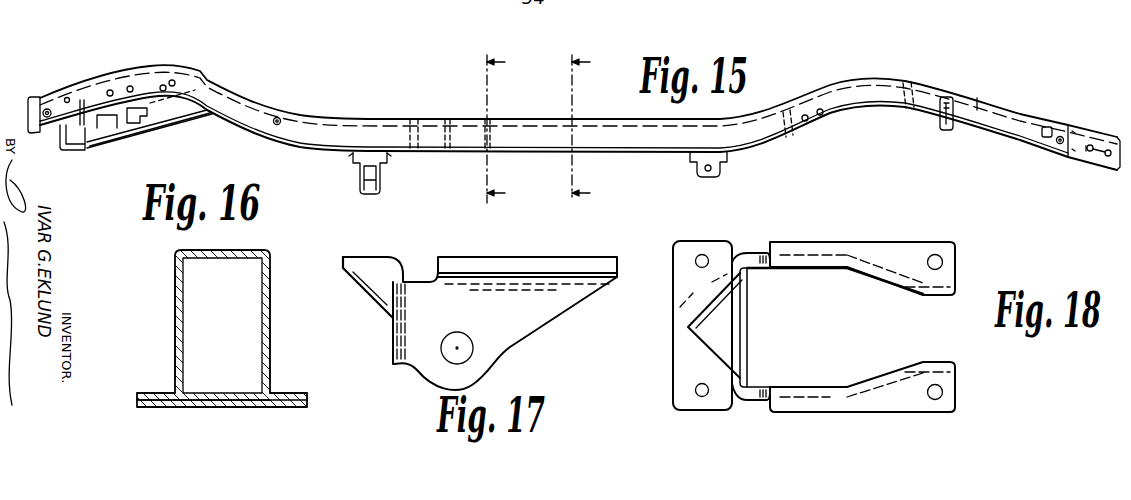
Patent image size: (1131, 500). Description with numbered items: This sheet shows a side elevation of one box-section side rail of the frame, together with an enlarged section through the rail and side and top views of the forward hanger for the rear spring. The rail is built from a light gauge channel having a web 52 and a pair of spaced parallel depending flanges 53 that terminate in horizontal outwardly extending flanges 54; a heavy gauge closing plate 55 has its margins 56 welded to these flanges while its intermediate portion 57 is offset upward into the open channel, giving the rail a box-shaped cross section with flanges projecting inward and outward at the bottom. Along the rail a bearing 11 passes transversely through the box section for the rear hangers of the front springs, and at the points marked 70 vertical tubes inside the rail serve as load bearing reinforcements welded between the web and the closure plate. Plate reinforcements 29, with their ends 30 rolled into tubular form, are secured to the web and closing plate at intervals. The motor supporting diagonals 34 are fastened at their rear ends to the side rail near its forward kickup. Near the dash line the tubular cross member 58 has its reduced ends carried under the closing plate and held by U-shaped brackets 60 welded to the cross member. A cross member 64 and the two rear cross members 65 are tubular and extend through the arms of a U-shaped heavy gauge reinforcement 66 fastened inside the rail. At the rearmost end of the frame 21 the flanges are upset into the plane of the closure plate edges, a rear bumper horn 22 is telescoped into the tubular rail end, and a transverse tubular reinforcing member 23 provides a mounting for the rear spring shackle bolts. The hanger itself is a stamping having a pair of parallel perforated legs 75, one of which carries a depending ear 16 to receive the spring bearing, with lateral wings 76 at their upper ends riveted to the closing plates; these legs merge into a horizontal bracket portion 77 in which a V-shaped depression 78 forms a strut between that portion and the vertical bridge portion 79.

In FIG. 15, the bearing 11 is at (278, 118).
In FIG. 15, the apertured depending ears 16 is at (594, 127).
In FIG. 15, the rearmost end of the frame 21 is at (509, 127).
In FIG. 15, the rear bumper horn 22 is at (1080, 138).
In FIG. 15, the transverse tubular reinforcing member 23 is at (1058, 146).
In FIG. 15, the reinforcements 29 is at (173, 80).
In FIG. 15, the rolled ends of reinforcements 30 is at (132, 86).
In FIG. 15, the motor supporting diagonals 34 is at (157, 118).
In FIG. 16, the web 52 is at (250, 251).
In FIG. 16, the depending flanges 53 is at (176, 327).
In FIG. 16, the horizontal outwardly extending flanges 54 is at (155, 392).
In FIG. 16, the closing plate 55 is at (247, 408).
In FIG. 16, the margins of closing plate 56 is at (156, 407).
In FIG. 16, the intermediate portion of closing plate 57 is at (218, 407).
In FIG. 15, the cross member 58 is at (355, 162).
In FIG. 15, the U-shaped brackets 60 is at (384, 157).
In FIG. 15, the cross member 64 is at (83, 150).
In FIG. 15, the rear cross members 65 is at (948, 131).
In FIG. 15, the U-shaped heavy gauge reinforcement 66 is at (972, 105).
In FIG. 15, the load bearing reinforcement points 70 is at (410, 118).
In FIG. 15, the parallel legs 75 is at (722, 172).
In FIG. 17, the parallel legs 75 is at (533, 317).
In FIG. 18, the parallel legs 75 is at (827, 386).
In FIG. 18, the lateral wings 76 is at (897, 393).
In FIG. 18, the bracket portion 77 is at (686, 276).
In FIG. 17, the V-shaped depression 78 is at (382, 278).
In FIG. 18, the V-shaped depression 78 is at (720, 325).
In FIG. 18, the vertical bridge portion 79 is at (746, 355).